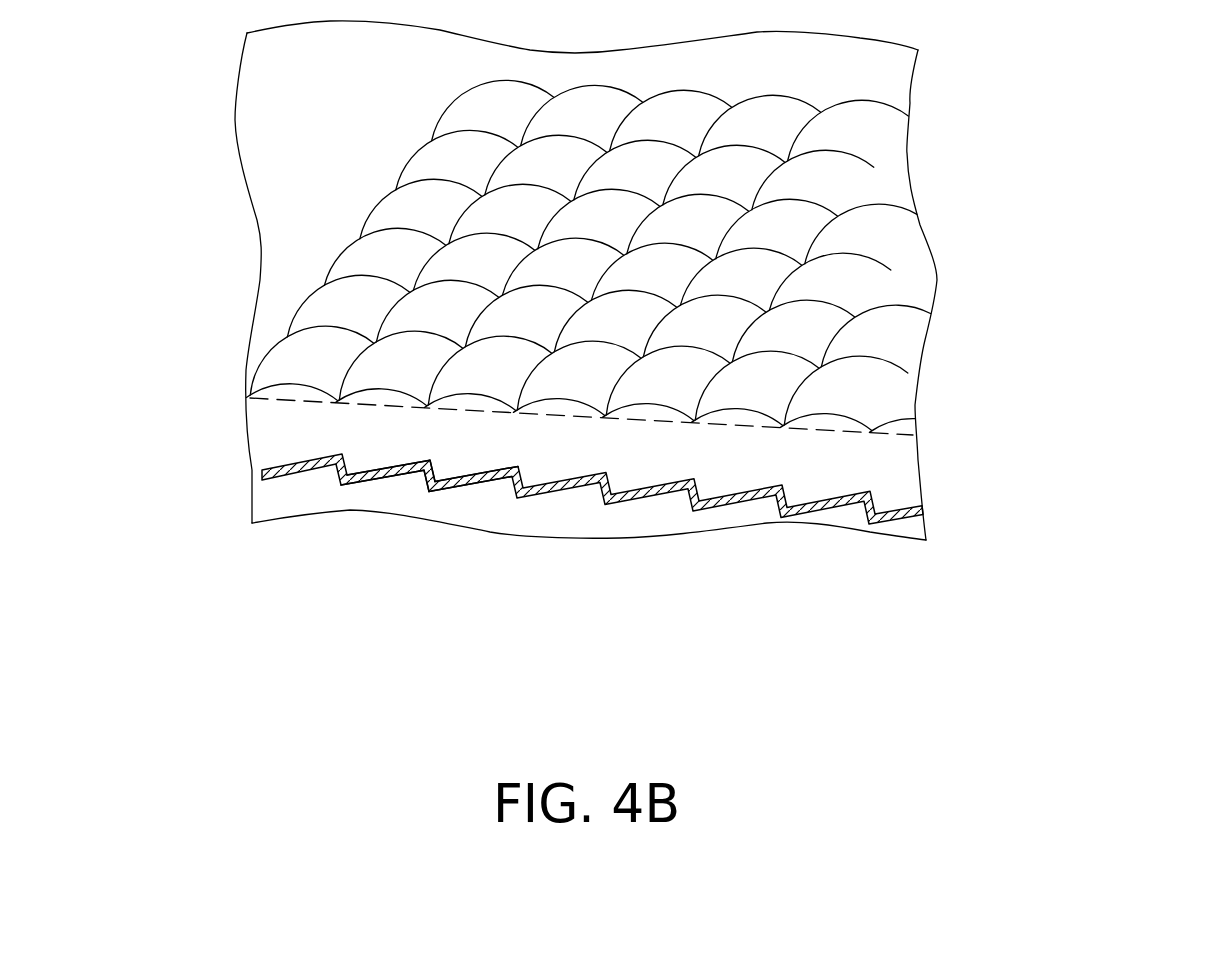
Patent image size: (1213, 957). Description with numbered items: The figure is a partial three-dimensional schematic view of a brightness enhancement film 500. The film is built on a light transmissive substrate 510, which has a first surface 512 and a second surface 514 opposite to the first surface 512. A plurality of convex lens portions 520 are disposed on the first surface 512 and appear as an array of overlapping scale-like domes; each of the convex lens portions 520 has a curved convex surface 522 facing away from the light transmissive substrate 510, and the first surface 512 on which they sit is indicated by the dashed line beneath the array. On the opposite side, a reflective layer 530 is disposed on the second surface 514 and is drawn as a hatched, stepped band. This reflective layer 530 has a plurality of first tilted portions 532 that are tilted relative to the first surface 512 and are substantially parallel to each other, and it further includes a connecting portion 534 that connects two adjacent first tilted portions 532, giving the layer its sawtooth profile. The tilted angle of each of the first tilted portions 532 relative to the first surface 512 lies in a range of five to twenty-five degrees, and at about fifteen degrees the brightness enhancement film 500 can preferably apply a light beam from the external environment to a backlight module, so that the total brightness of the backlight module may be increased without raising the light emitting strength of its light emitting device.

The brightness enhancement film 500 is at (1198, 632).
The light transmissive substrate 510 is at (265, 455).
The first surface 512 is at (306, 404).
The second surface 514 is at (320, 455).
The convex lens portions 520 is at (536, 256).
The curved convex surface 522 is at (328, 293).
The reflective layer 530 is at (288, 476).
The first tilted portions 532 is at (379, 479).
The connecting portion 534 is at (427, 492).